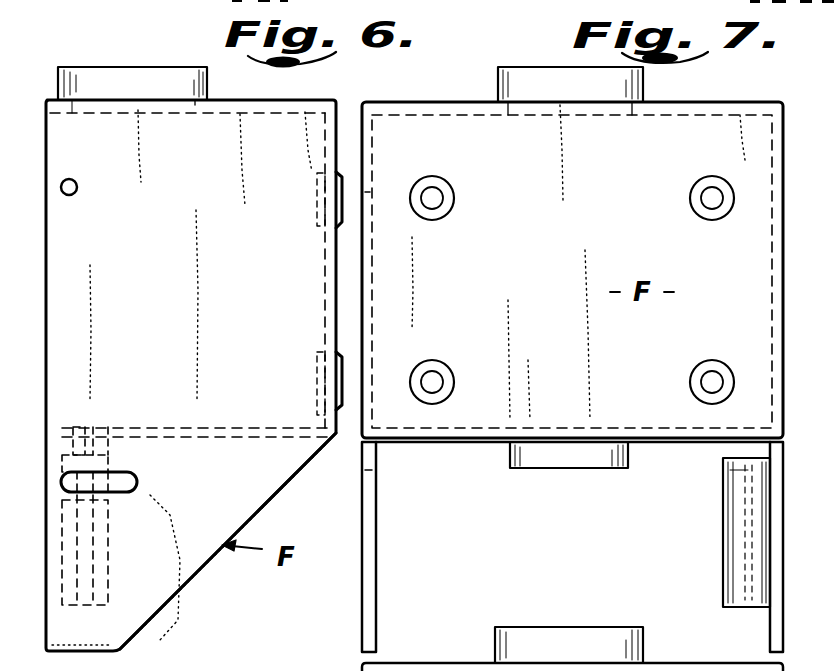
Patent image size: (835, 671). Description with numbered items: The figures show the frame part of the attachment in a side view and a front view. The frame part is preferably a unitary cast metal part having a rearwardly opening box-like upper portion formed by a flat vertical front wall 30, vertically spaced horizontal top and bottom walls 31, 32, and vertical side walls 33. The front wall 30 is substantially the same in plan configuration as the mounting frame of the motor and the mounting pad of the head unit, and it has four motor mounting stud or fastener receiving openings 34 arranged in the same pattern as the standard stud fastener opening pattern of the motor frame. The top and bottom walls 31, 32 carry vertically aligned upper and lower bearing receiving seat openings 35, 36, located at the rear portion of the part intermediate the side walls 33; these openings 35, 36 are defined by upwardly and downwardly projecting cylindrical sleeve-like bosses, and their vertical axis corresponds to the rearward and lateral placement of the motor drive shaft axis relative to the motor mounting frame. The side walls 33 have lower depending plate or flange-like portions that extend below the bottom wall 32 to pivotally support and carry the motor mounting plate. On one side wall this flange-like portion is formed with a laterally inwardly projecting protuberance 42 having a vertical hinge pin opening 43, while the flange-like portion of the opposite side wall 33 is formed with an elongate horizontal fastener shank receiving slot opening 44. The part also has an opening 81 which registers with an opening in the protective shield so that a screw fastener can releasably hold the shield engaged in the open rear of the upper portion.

In FIG. 6, the front wall 30 is at (343, 276).
In FIG. 7, the front wall 30 is at (592, 255).
In FIG. 6, the top wall 31 is at (322, 100).
In FIG. 7, the top wall 31 is at (462, 100).
In FIG. 6, the bottom wall 32 is at (272, 437).
In FIG. 7, the bottom wall 32 is at (436, 445).
In FIG. 6, the side walls 33 is at (262, 498).
In FIG. 7, the side walls 33 is at (785, 258).
In FIG. 6, the fastener receiving openings 34 is at (320, 378).
In FIG. 7, the fastener receiving openings 34 is at (436, 197).
In FIG. 6, the upper bearing receiving seat opening 35 is at (195, 105).
In FIG. 7, the upper bearing receiving seat opening 35 is at (508, 115).
In FIG. 6, the lower bearing receiving seat opening 36 is at (175, 466).
In FIG. 7, the lower bearing receiving seat opening 36 is at (607, 425).
In FIG. 6, the protuberance 42 is at (108, 549).
In FIG. 7, the protuberance 42 is at (722, 505).
In FIG. 7, the hinge pin opening 43 is at (725, 525).
In FIG. 6, the fastener shank receiving slot opening 44 is at (128, 470).
In FIG. 7, the fastener shank receiving slot opening 44 is at (370, 483).
In FIG. 6, the opening 81 is at (74, 196).
In FIG. 7, the opening 81 is at (368, 182).